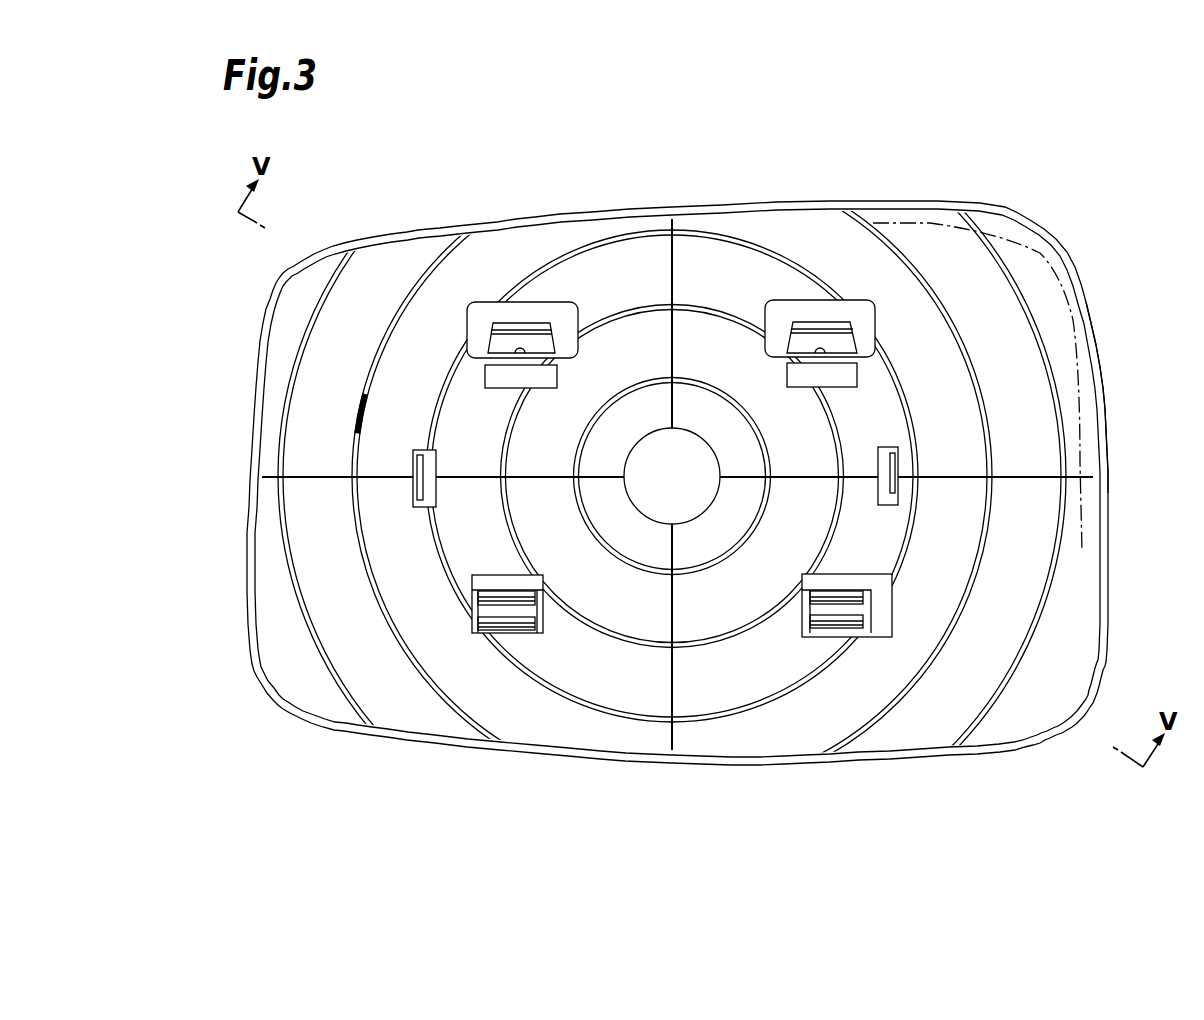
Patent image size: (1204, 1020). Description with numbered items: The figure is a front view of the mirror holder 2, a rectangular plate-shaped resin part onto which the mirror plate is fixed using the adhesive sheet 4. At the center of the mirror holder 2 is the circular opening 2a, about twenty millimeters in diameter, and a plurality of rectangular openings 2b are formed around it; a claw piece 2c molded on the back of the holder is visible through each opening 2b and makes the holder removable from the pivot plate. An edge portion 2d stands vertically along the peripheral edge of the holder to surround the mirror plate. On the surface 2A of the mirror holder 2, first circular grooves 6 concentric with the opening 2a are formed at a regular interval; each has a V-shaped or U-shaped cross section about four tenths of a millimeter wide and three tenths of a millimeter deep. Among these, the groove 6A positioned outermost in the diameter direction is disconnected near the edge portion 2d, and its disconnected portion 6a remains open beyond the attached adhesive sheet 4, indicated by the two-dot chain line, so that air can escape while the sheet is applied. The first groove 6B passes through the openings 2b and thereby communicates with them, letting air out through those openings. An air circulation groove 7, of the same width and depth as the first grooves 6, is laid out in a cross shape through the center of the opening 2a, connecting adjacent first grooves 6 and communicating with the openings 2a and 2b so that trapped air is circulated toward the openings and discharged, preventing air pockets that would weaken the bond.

The mirror holder 2 is at (372, 207).
The surface 2A is at (1075, 615).
The opening 2a is at (688, 457).
The rectangular openings 2b is at (780, 317).
The claw piece 2c is at (843, 338).
The edge portion 2d is at (1099, 354).
The adhesive sheet 4 is at (1032, 243).
The first circular grooves 6 is at (622, 310).
The first groove positioned outside in the diameter direction 6A is at (970, 595).
The first groove passing through the openings 6B is at (768, 702).
The disconnected portion 6a is at (838, 210).
The air circulation groove 7 is at (1021, 470).